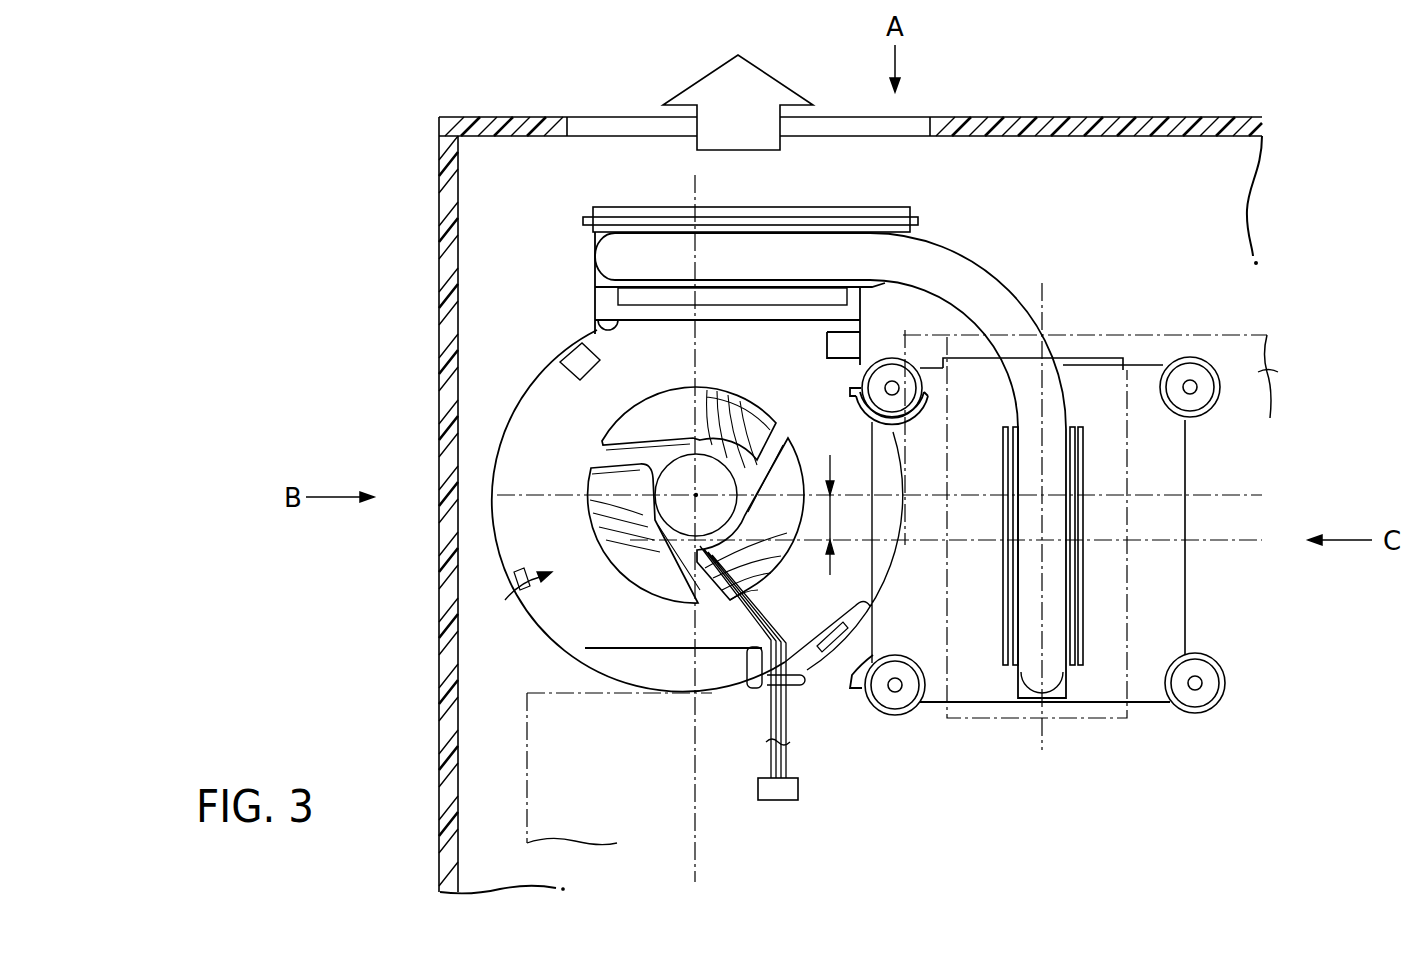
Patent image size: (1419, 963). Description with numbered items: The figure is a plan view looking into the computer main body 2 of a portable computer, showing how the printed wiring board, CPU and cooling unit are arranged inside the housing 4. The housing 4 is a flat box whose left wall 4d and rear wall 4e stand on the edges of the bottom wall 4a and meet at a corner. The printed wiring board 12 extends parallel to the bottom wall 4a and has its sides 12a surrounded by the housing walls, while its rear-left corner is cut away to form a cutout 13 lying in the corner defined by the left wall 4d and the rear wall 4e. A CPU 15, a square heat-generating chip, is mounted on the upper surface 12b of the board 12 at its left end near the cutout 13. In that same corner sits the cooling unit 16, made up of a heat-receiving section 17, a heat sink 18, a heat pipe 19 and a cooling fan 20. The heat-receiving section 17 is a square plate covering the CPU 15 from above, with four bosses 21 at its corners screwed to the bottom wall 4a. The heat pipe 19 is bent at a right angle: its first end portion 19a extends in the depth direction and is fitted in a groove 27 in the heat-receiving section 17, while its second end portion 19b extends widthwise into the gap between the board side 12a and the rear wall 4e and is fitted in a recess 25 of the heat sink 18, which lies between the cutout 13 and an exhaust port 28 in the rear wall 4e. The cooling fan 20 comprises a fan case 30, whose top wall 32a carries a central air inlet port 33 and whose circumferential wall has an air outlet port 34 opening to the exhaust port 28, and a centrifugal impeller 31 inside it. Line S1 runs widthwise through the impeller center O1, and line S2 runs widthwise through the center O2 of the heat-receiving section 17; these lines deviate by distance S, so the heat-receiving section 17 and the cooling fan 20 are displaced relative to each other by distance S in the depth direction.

The computer main body 2 is at (430, 829).
The housing 4 is at (845, 476).
The bottom wall 4a is at (1236, 196).
The left and right walls 4d is at (438, 344).
The rear wall 4e is at (1118, 116).
The printed wiring board 12 is at (538, 772).
The sides of the printed wiring board 12a is at (1180, 332).
The upper surface of the printed wiring board 12b is at (1288, 371).
The cutout 13 is at (560, 692).
The CPU 15 is at (995, 720).
The cooling unit 16 is at (996, 232).
The heat-receiving section 17 is at (1142, 706).
The heat sink 18 is at (887, 216).
The heat pipe 19 is at (846, 468).
The first end portion 19a is at (1062, 680).
The second end portion 19b is at (817, 250).
The cooling fan 20 is at (516, 606).
The bosses 21 is at (886, 388).
The recess 25 is at (647, 240).
The groove 27 is at (1068, 338).
The exhaust port 28 is at (613, 125).
The fan case 30 is at (533, 392).
The centrifugal impeller 31 is at (696, 470).
The top wall 32a is at (567, 615).
The air inlet port 33 is at (642, 404).
The air outlet port 34 is at (592, 330).
The center of the impeller O1 is at (693, 498).
The center of the heat-receiving section O2 is at (1044, 542).
The distance S is at (839, 515).
The line S1 is at (546, 492).
The line S2 is at (1250, 545).